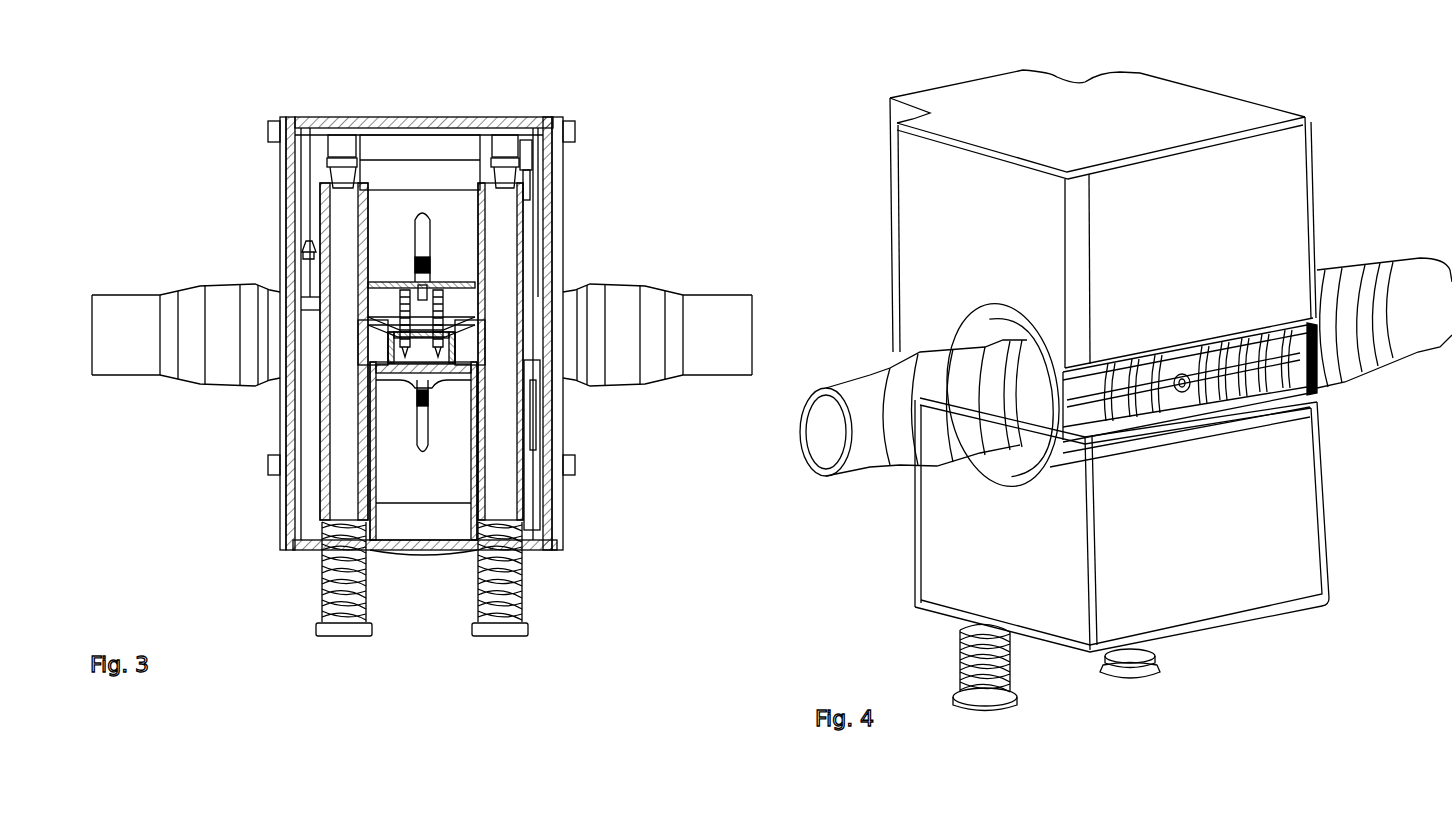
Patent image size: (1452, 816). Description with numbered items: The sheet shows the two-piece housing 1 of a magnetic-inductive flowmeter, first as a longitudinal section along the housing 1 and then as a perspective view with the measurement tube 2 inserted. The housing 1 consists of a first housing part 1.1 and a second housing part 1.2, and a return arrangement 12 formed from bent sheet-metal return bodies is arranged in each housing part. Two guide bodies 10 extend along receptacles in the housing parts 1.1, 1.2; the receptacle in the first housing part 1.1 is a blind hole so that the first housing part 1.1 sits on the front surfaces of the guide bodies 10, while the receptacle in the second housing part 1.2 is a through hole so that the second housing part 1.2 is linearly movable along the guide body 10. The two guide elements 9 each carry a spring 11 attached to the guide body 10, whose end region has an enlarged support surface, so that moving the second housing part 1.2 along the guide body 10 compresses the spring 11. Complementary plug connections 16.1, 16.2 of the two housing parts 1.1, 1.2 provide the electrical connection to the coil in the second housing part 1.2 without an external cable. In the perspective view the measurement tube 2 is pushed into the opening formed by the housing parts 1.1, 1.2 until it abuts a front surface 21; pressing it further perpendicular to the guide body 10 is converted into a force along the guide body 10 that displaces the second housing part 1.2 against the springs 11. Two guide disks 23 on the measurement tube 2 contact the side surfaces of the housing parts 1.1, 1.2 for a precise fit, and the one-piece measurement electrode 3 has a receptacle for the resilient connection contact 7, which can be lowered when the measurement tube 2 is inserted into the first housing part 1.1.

In FIG. 4, the housing 1 is at (1139, 361).
In FIG. 4, the first housing part 1.1 is at (1103, 219).
In FIG. 4, the second housing part 1.2 is at (1285, 540).
In FIG. 3, the measurement tube 2 is at (422, 335).
In FIG. 4, the measurement tube 2 is at (882, 362).
In FIG. 4, the measurement electrode 3 is at (1185, 398).
In FIG. 4, the connection contact 7 is at (1185, 375).
In FIG. 3, the guide element 9 is at (528, 579).
In FIG. 3, the guide body 10 is at (500, 500).
In FIG. 4, the guide body 10 is at (970, 666).
In FIG. 3, the spring 11 is at (325, 600).
In FIG. 4, the spring 11 is at (965, 686).
In FIG. 3, the return arrangement 12 is at (460, 175).
In FIG. 3, the first valve pin 16.1 is at (405, 292).
In FIG. 3, the second valve pin 16.2 is at (395, 335).
In FIG. 4, the front surface 21 is at (1085, 440).
In FIG. 3, the guide disk 23 is at (460, 332).